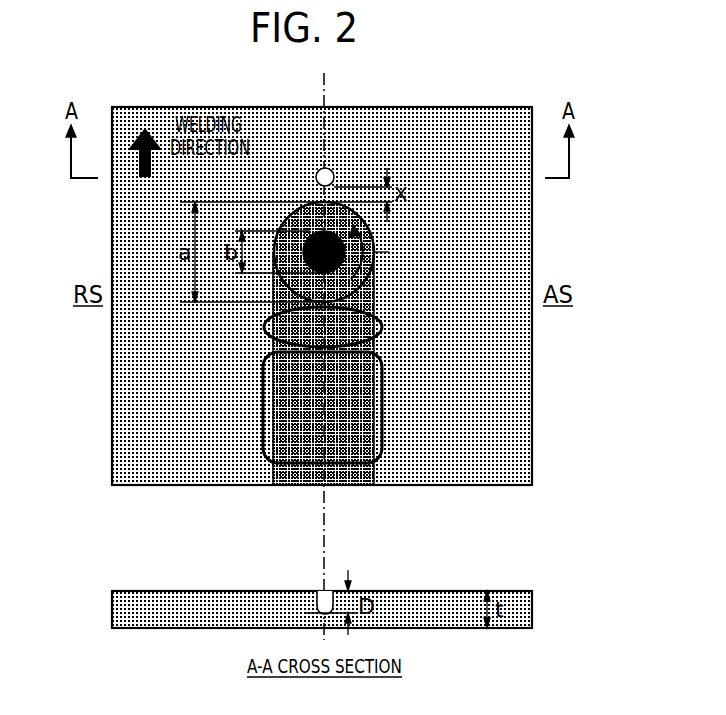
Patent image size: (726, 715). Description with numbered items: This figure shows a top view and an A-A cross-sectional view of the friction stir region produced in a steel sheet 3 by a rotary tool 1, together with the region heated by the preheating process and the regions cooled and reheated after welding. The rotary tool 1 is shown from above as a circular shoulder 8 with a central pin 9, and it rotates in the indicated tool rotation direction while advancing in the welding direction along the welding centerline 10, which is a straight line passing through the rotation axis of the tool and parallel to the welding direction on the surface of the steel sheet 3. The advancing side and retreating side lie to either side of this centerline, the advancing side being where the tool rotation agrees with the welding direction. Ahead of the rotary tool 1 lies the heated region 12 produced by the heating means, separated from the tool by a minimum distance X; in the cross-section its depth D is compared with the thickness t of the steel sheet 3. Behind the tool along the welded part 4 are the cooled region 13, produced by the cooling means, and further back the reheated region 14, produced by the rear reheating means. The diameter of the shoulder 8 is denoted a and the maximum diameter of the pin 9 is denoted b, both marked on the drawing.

The rotary tool 1 is at (381, 308).
The steel sheet 3 is at (174, 470).
The welded part 4 is at (365, 410).
The shoulder 8 is at (305, 217).
The pin 9 is at (298, 240).
The welding centerline 10 is at (323, 518).
The heated region 12 is at (334, 172).
The cooled region 13 is at (264, 326).
The reheated region 14 is at (264, 403).